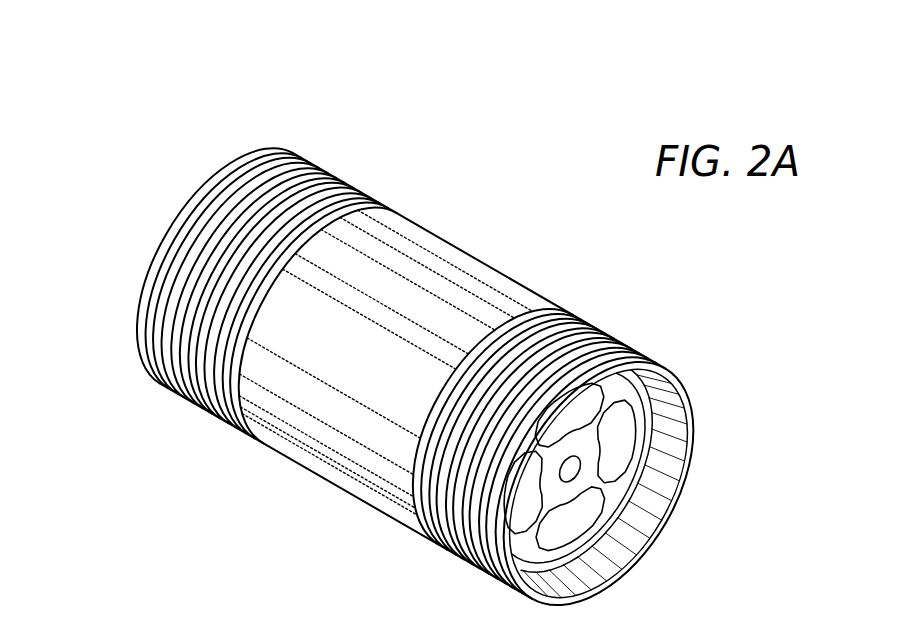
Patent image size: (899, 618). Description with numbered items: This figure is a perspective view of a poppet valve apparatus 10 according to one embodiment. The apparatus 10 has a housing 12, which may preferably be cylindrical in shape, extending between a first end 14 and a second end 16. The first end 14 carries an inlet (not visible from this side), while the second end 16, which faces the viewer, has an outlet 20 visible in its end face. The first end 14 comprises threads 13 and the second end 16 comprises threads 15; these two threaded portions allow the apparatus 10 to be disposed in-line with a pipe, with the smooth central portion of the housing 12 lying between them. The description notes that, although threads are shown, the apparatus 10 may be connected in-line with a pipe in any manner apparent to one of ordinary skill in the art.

The poppet valve apparatus 10 is at (228, 103).
The housing 12 is at (433, 270).
The threads 13 is at (290, 188).
The first end 14 is at (142, 333).
The threads 15 is at (582, 353).
The second end 16 is at (690, 442).
The outlet 20 is at (640, 520).